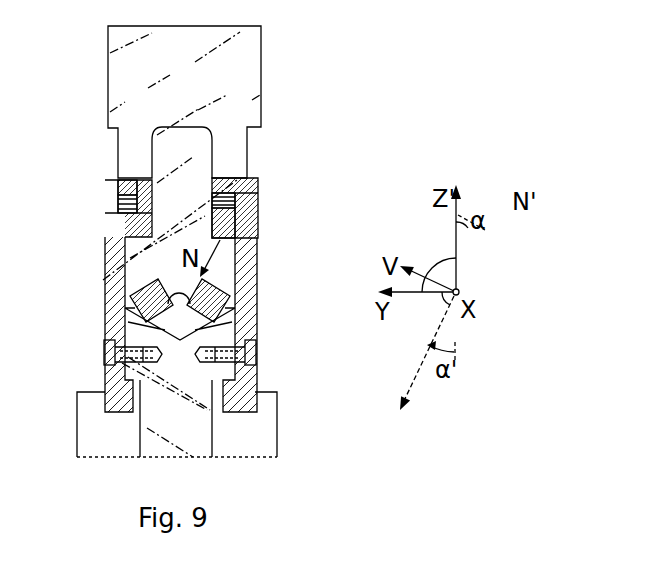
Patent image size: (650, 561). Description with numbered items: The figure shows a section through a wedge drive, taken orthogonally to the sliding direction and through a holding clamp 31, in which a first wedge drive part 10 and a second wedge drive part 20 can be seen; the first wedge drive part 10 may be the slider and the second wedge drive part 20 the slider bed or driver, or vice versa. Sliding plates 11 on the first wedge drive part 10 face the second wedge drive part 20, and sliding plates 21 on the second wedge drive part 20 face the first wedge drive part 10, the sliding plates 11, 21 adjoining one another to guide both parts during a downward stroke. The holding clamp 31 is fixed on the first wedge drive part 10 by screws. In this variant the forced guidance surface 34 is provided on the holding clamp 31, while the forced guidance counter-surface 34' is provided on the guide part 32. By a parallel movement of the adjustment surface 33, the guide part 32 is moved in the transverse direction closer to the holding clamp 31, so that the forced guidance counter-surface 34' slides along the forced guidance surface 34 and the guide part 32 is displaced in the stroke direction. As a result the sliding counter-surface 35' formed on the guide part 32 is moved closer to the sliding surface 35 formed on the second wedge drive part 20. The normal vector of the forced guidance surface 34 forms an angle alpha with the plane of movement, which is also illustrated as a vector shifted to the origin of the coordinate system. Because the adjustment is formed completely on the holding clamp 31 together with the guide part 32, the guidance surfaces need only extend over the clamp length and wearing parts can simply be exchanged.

The first wedge drive part 10 is at (197, 450).
The sliding plates 11 is at (104, 331).
The second wedge drive part 20 is at (252, 100).
The sliding plates 21 is at (124, 310).
The holding clamp 31 is at (258, 231).
The guide part 32 is at (247, 177).
The adjustment surface 33 is at (209, 181).
The forced guidance surface 34 is at (90, 178).
The forced guidance counter-surface 34' is at (268, 199).
The sliding surface 35 is at (90, 203).
The sliding counter-surface 35' is at (268, 249).